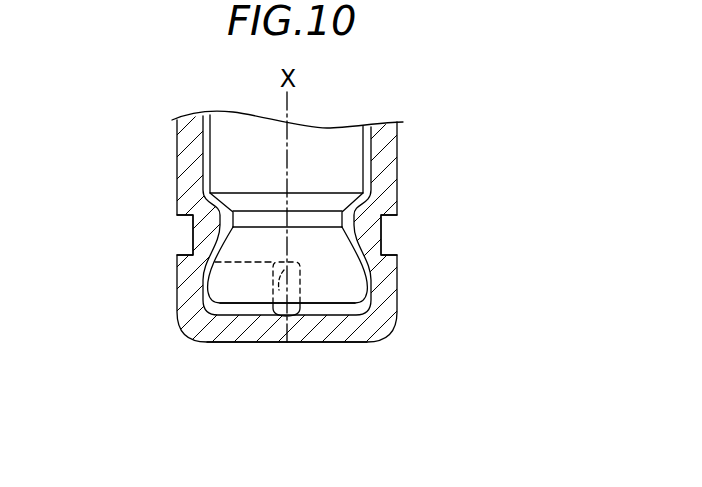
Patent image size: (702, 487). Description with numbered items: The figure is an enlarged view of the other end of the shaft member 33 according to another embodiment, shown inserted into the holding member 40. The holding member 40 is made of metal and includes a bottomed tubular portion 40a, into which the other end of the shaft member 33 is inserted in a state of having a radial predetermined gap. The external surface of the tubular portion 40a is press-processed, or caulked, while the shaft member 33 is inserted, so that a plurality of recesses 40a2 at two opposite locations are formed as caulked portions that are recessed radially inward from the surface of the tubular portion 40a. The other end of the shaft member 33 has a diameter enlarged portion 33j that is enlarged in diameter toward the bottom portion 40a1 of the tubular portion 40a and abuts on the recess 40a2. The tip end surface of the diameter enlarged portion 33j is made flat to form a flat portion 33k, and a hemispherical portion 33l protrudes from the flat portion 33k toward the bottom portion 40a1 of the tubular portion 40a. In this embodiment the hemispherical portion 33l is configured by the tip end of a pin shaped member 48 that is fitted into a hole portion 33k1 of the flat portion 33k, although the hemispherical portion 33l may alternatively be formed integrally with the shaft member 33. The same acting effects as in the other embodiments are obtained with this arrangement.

The shaft member 33 is at (302, 238).
The diameter enlarged portion 33j is at (352, 285).
The flat portion 33k is at (247, 303).
The hole portion 33k1 is at (215, 262).
The hemispherical portion 33l is at (275, 314).
The pin shaped member 48 is at (262, 334).
The holding member 40 is at (397, 162).
The tubular portion 40a is at (323, 227).
The bottom portion 40a1 is at (343, 337).
The recess 40a2 is at (193, 231).